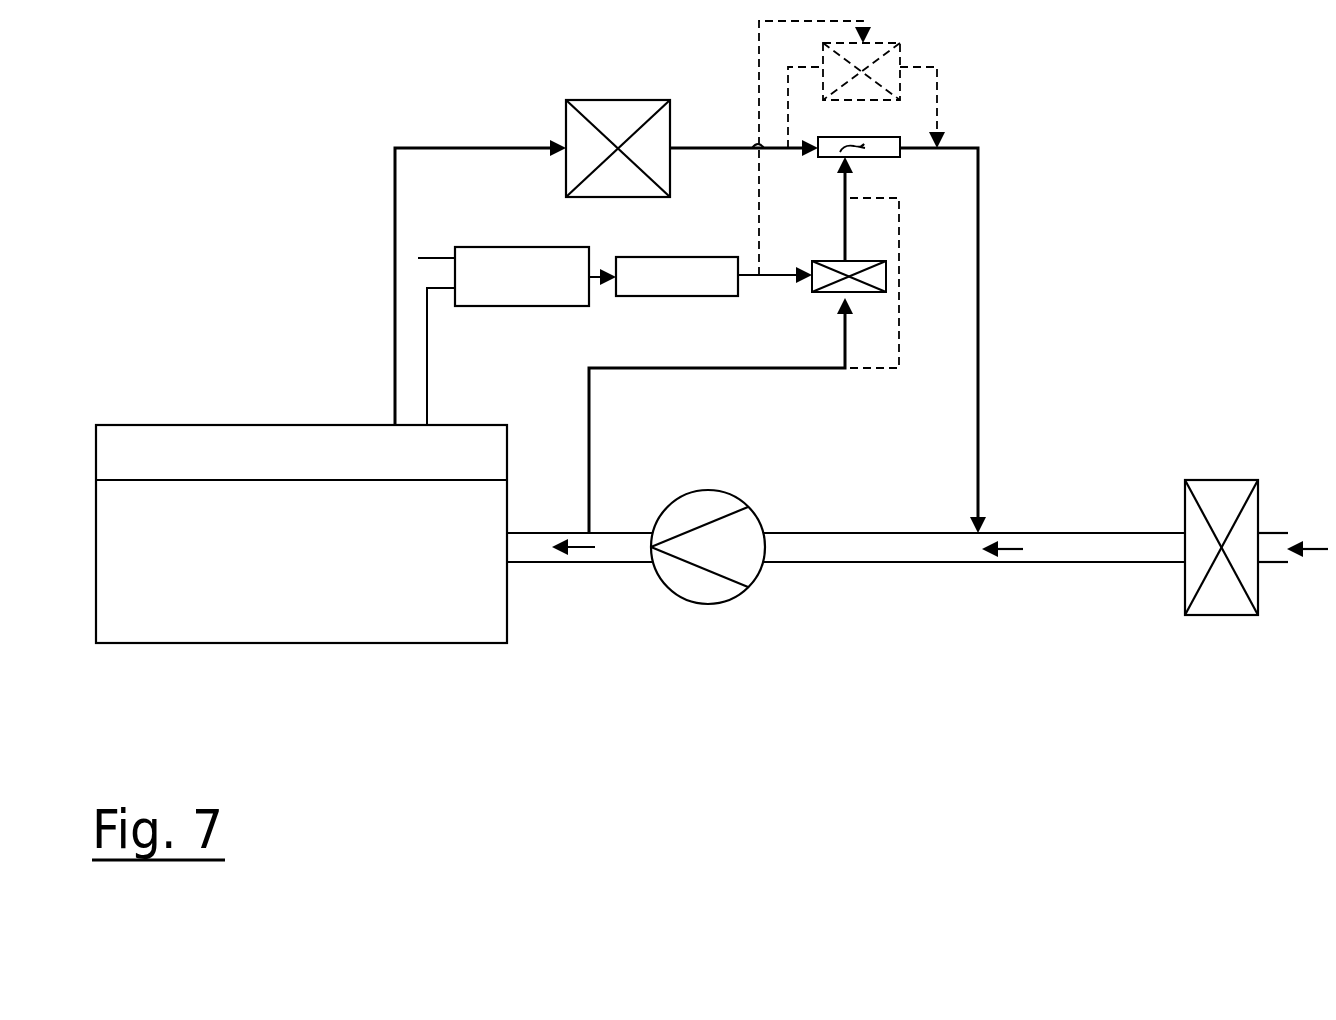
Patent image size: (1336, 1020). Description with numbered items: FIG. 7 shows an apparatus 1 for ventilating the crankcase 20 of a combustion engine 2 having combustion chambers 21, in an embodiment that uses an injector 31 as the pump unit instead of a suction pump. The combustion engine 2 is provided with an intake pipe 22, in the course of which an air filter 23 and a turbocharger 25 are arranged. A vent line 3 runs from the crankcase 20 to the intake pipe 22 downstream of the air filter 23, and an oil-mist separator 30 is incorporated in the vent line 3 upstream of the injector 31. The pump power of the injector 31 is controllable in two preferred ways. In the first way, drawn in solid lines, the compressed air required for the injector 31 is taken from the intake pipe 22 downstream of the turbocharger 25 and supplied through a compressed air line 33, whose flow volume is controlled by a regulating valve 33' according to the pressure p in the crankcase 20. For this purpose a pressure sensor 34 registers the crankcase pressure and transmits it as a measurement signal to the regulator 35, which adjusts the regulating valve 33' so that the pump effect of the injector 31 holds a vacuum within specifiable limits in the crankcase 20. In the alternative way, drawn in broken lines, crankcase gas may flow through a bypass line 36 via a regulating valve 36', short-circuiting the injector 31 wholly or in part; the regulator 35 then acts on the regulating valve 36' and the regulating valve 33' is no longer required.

The apparatus 1 is at (1113, 218).
The combustion engine 2 is at (522, 479).
The vent line 3 is at (395, 285).
The crankcase 20 is at (211, 443).
The combustion chambers 21 is at (357, 612).
The intake pipe 22 is at (620, 562).
The air filter 23 is at (1222, 603).
The turbocharger 25 is at (710, 595).
The oil-mist separator 30 is at (617, 107).
The injector 31 is at (883, 152).
The compressed air line 33 is at (744, 345).
The regulating valve 33' is at (822, 310).
The pressure sensor 34 is at (500, 255).
The regulator 35 is at (701, 258).
The bypass line 36 is at (852, 148).
The regulating valve 36' is at (910, 52).